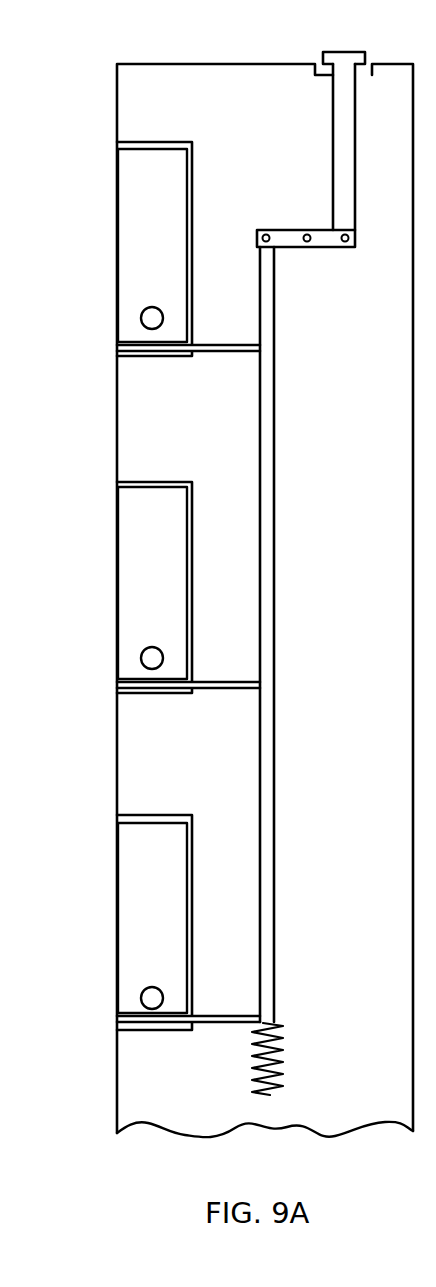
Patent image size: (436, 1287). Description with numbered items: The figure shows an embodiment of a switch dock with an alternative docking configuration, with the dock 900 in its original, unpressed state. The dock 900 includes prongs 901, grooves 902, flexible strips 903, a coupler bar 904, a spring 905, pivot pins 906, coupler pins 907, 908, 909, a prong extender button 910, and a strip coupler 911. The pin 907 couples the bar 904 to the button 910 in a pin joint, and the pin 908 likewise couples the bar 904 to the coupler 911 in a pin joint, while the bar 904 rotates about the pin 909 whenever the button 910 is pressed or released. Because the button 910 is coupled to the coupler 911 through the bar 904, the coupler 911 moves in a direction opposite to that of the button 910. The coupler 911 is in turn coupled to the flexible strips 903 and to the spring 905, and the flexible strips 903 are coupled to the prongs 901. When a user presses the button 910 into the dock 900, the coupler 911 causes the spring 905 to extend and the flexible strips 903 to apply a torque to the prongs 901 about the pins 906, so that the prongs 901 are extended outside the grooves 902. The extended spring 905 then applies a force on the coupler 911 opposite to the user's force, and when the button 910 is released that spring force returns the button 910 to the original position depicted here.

The dock 900 is at (373, 782).
The prongs 901 is at (180, 256).
The grooves 902 is at (164, 140).
The flexible strips 903 is at (230, 353).
The coupler bar 904 is at (300, 248).
The spring 905 is at (283, 1058).
The pivot pins 906 is at (144, 309).
The coupler pin 907 is at (346, 246).
The coupler pin 908 is at (263, 233).
The coupler pin 909 is at (307, 233).
The prong extender button 910 is at (341, 52).
The strip coupler 911 is at (276, 483).